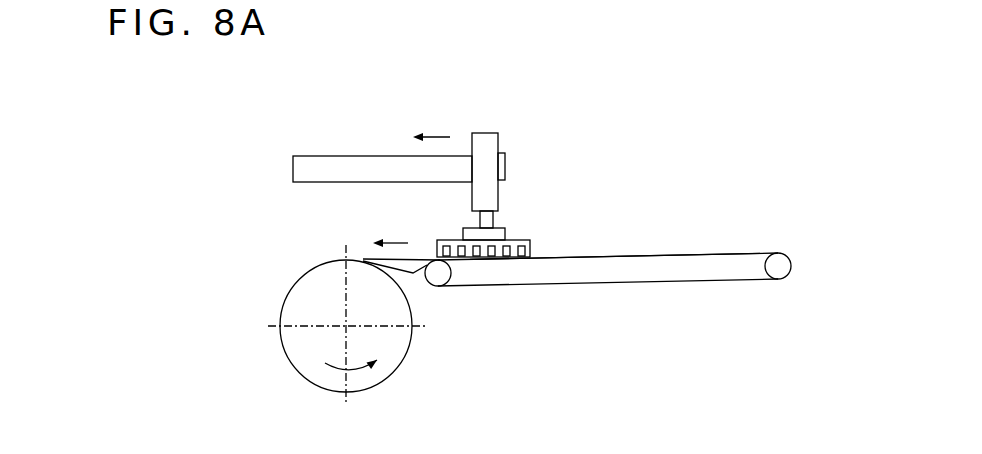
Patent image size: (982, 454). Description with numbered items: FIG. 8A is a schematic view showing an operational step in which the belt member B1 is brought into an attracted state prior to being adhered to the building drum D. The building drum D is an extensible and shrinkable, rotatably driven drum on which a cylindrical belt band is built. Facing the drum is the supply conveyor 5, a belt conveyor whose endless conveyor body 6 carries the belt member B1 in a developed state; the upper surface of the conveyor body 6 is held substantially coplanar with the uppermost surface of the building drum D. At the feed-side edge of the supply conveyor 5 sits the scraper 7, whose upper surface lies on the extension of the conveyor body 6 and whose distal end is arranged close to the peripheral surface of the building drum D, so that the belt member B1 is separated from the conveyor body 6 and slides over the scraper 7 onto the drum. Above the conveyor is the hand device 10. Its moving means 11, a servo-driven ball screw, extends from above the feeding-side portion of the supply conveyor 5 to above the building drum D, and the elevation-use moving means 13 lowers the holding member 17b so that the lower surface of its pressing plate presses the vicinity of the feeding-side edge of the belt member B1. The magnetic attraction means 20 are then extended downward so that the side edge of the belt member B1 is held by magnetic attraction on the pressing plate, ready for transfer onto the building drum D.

The hand device 10 is at (475, 112).
The moving means 11 is at (392, 160).
The elevation-use moving means 13 is at (487, 162).
The holding member 17b is at (517, 233).
The magnetic attraction means 20 is at (507, 257).
The supply conveyor 5 is at (588, 292).
The belt member B1 is at (643, 253).
The conveyor body 6 is at (707, 277).
The scraper 7 is at (363, 260).
The building drum D is at (297, 357).